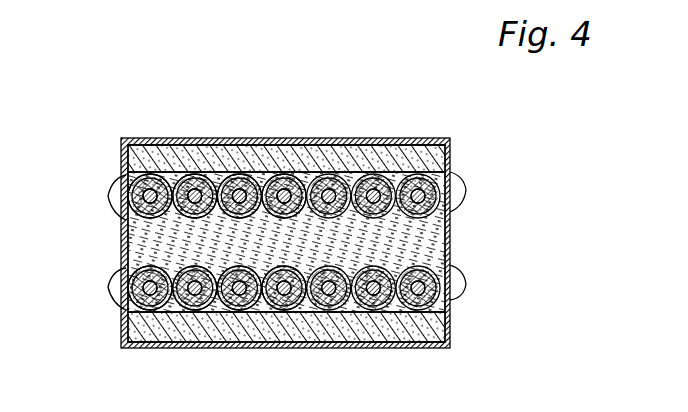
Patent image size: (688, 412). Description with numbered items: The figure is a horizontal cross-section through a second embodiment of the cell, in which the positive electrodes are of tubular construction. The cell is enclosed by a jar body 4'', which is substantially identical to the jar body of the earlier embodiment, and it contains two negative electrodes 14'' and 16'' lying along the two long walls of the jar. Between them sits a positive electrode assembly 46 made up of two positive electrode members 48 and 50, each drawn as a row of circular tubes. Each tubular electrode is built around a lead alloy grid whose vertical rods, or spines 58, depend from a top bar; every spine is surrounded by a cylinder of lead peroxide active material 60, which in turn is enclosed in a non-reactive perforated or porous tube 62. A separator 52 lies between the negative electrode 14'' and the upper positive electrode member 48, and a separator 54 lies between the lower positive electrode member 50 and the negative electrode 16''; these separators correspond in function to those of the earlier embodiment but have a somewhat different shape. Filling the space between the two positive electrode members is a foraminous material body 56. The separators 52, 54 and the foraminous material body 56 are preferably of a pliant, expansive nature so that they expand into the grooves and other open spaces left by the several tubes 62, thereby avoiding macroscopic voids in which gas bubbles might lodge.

The jar body 4'' is at (305, 218).
The negative electrode 14'' is at (286, 117).
The negative electrode 16'' is at (286, 365).
The positive electrode assembly 46 is at (472, 188).
The positive electrode member 48 is at (104, 197).
The positive electrode member 50 is at (104, 287).
The separator 52 is at (448, 168).
The separator 54 is at (451, 322).
The foraminous material body 56 is at (450, 241).
The spine 58 is at (145, 178).
The lead peroxide active material 60 is at (152, 194).
The porous tube 62 is at (311, 347).